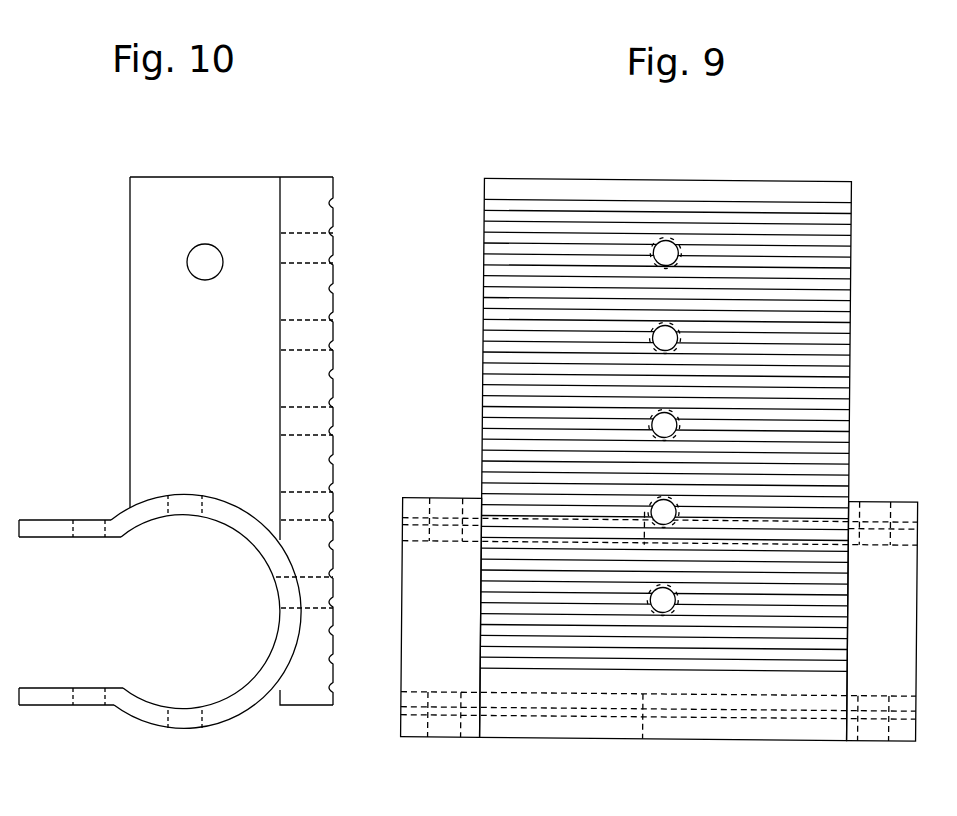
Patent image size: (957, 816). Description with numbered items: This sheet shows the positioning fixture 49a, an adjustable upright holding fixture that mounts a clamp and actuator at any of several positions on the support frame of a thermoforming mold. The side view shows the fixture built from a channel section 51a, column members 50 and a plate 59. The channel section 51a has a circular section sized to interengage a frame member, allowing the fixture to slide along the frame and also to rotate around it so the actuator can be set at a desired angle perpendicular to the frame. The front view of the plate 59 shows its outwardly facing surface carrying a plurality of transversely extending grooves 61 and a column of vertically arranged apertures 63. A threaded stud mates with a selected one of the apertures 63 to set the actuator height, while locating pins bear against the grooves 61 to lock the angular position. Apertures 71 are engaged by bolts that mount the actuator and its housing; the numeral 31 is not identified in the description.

In FIG. 10, the column member 50 is at (143, 239).
In FIG. 10, the plate 59 is at (329, 177).
In FIG. 9, the plate 59 is at (629, 192).
In FIG. 10, the transversely extending grooves 61 is at (334, 202).
In FIG. 9, the transversely extending grooves 61 is at (482, 206).
In FIG. 10, the vertically arranged apertures 63 is at (324, 247).
In FIG. 9, the vertically arranged apertures 63 is at (669, 250).
In FIG. 10, the apertures 71 is at (60, 390).
In FIG. 10, the positioning fixture 49a is at (104, 465).
In FIG. 10, the clamp inner surface 31 is at (140, 612).
In FIG. 10, the channel section 51a is at (106, 712).